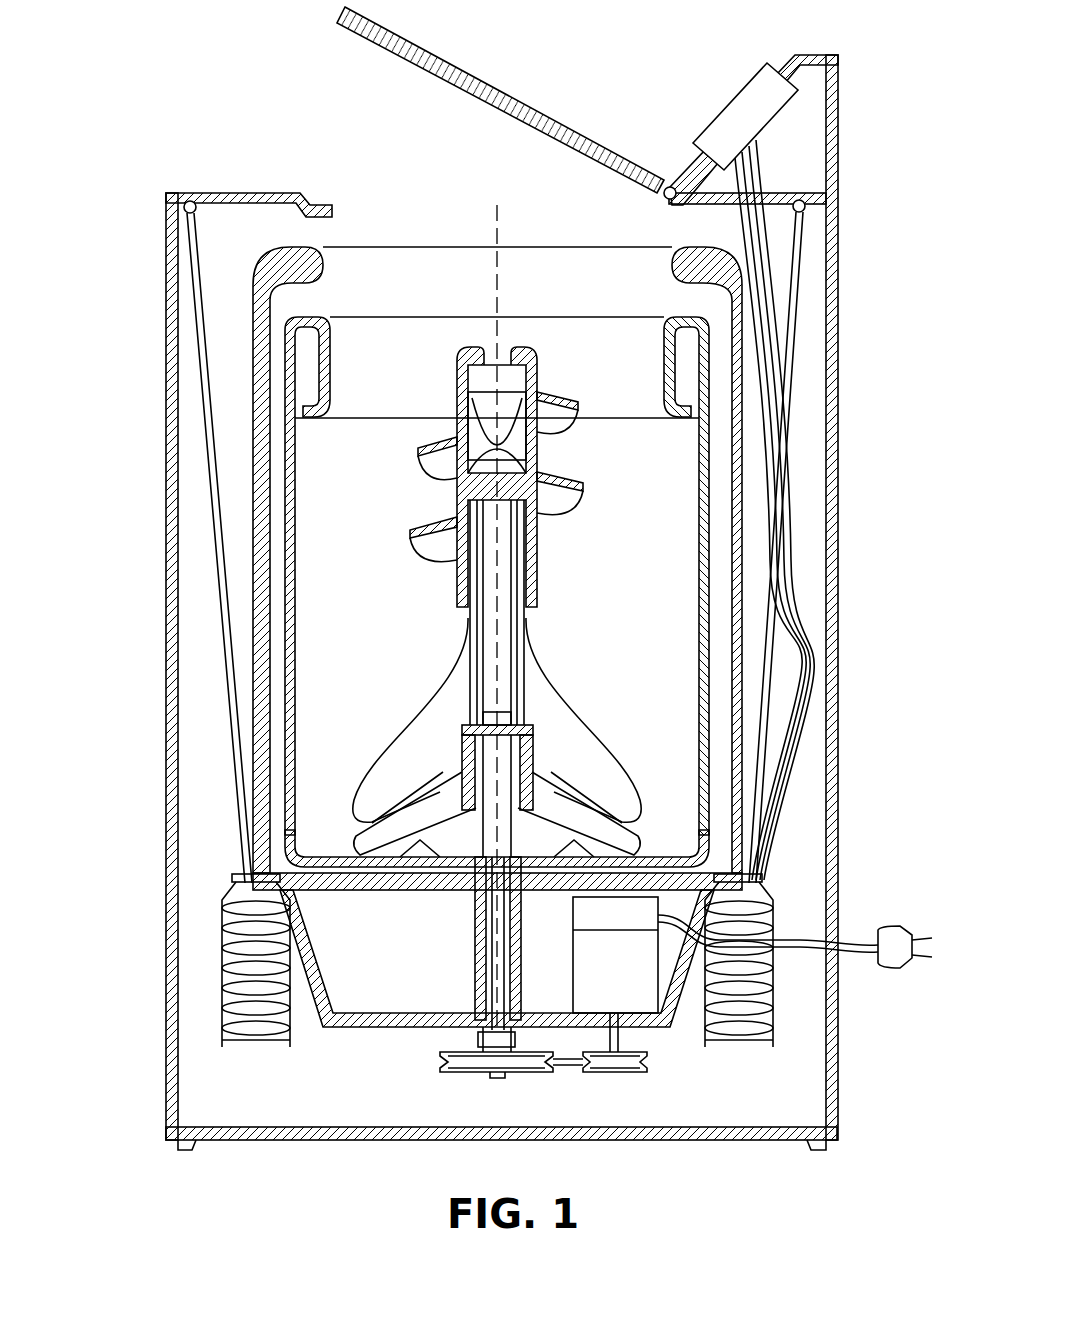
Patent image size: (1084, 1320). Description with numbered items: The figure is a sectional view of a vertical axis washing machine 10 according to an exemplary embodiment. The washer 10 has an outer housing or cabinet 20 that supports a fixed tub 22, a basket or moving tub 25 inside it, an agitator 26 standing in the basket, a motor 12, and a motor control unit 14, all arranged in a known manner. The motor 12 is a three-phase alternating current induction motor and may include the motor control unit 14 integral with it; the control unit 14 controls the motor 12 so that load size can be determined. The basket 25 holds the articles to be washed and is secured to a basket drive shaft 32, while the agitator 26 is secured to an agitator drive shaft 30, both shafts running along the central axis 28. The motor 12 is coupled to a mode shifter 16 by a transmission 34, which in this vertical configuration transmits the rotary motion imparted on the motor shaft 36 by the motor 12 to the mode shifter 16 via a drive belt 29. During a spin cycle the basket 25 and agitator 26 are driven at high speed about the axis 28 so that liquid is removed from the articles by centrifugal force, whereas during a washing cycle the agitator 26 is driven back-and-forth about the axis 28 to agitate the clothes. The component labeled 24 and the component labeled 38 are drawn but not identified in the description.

The washing machine 10 is at (246, 97).
The motor 12 is at (640, 1018).
The motor control unit 14 is at (566, 905).
The mode shifter 16 is at (548, 1045).
The cabinet 20 is at (166, 268).
The fixed tub 22 is at (246, 381).
The wash basket 24 is at (698, 484).
The basket 25 is at (440, 306).
The agitator 26 is at (530, 645).
The axis 28 is at (500, 228).
The drive belt 29 is at (533, 1042).
The agitator drive shaft 30 is at (493, 968).
The basket drive shaft 32 is at (475, 930).
The transmission 34 is at (453, 1090).
The motor shaft 36 is at (625, 1040).
The clutch / brake block 38 is at (478, 1038).